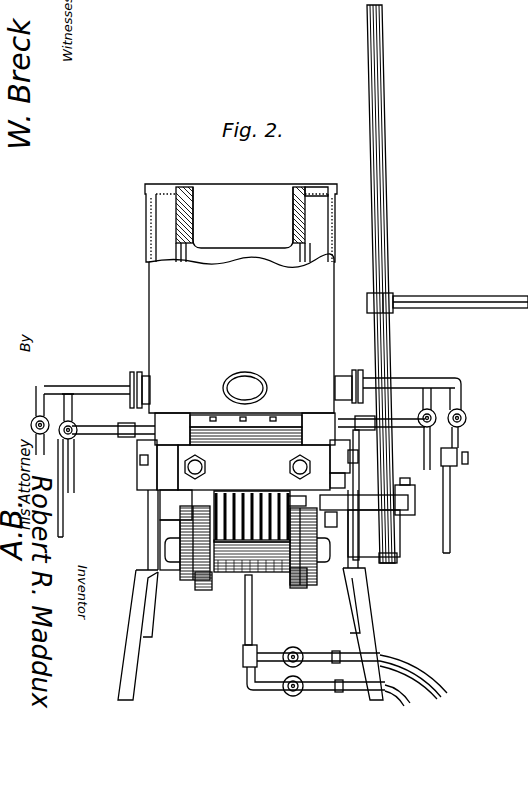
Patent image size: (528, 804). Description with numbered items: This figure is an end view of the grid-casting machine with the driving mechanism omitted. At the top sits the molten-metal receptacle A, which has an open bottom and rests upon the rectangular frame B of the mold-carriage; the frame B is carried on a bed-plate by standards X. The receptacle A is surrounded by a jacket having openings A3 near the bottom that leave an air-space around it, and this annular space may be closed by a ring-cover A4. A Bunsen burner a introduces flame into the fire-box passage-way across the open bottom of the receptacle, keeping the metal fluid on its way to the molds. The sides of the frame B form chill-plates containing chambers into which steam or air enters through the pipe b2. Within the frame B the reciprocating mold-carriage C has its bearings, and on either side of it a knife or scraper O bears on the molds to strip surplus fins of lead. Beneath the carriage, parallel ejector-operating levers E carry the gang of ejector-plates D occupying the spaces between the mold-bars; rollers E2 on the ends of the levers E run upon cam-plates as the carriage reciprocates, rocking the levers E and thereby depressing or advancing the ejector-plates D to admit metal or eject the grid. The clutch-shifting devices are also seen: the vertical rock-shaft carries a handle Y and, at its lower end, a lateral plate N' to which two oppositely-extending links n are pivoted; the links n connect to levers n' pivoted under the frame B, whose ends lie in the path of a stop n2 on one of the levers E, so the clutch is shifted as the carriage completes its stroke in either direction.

The molten-metal receptacle A is at (241, 298).
The ring-cover A4 is at (319, 187).
The openings A3 is at (245, 388).
The lateral projection or plate N' is at (389, 284).
The handle Y is at (488, 297).
The Bunsen burner a is at (348, 362).
The pipe b2 is at (468, 500).
The knife or scraper O is at (270, 420).
The rectangular frame B is at (340, 465).
The mold-carriage C is at (245, 507).
The link n is at (377, 496).
The lever n' is at (362, 520).
The stop n2 is at (298, 508).
The ejector-plate D is at (238, 578).
The roller E2 is at (320, 582).
The ejector-operating lever E is at (303, 600).
The standard X is at (350, 540).